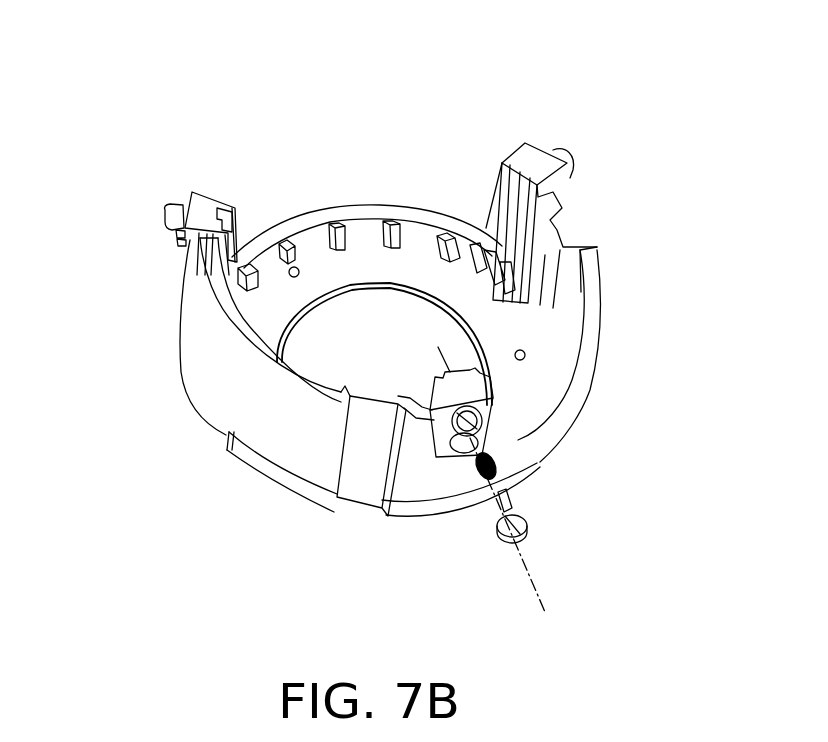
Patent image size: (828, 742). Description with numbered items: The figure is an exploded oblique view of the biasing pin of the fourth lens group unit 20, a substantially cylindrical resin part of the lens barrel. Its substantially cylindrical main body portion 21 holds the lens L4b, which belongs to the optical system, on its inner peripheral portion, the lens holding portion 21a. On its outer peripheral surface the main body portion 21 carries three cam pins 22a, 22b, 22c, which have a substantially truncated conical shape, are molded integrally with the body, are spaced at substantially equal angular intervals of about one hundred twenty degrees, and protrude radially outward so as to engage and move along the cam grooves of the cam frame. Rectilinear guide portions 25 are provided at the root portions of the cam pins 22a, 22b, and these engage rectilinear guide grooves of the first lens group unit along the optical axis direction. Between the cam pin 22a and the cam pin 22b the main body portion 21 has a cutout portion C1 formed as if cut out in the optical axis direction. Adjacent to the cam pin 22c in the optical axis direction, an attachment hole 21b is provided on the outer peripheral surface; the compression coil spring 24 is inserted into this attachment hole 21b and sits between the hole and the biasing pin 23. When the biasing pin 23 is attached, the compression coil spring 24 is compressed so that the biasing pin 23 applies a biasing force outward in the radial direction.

The fourth lens group unit 20 is at (237, 152).
The main body portion 21 is at (212, 423).
The lens holding portion 21a is at (398, 283).
The attachment hole 21b is at (490, 400).
The cam pin 22a is at (163, 207).
The cam pin 22b is at (567, 163).
The cam pin 22c is at (497, 433).
The biasing pin 23 is at (517, 540).
The compression coil spring 24 is at (500, 470).
The rectilinear guide portion 25 is at (195, 190).
The cutout portion C1 is at (323, 172).
The lens L4b is at (385, 320).